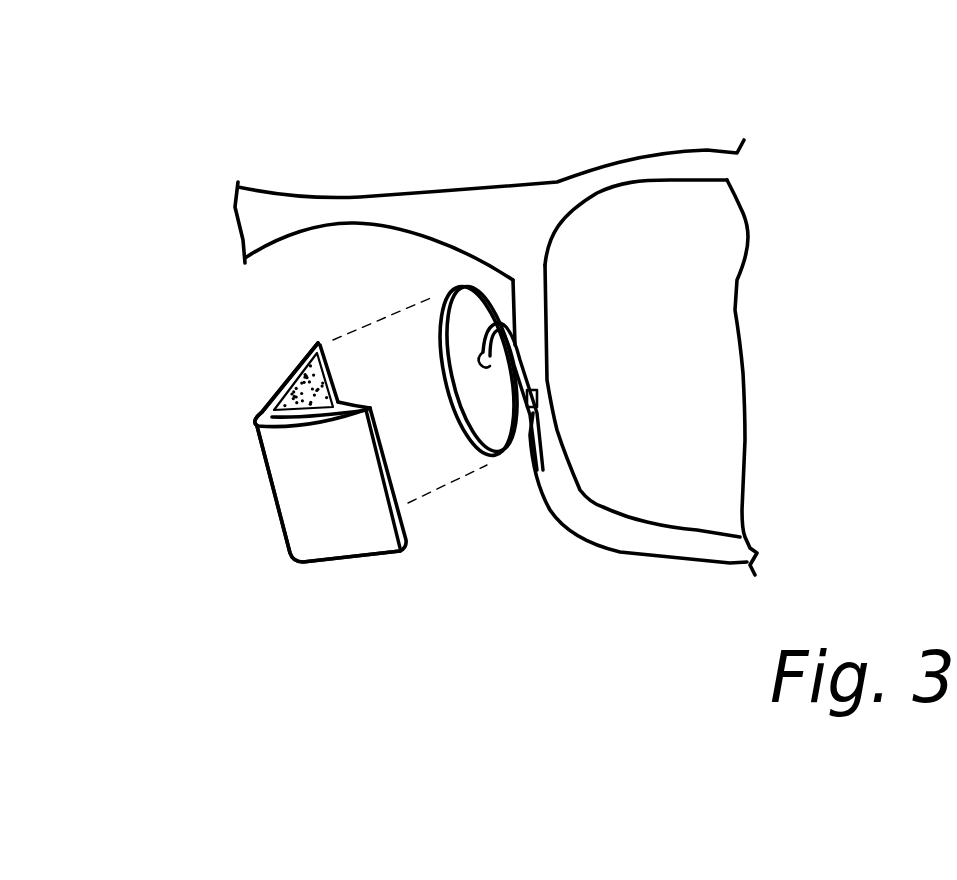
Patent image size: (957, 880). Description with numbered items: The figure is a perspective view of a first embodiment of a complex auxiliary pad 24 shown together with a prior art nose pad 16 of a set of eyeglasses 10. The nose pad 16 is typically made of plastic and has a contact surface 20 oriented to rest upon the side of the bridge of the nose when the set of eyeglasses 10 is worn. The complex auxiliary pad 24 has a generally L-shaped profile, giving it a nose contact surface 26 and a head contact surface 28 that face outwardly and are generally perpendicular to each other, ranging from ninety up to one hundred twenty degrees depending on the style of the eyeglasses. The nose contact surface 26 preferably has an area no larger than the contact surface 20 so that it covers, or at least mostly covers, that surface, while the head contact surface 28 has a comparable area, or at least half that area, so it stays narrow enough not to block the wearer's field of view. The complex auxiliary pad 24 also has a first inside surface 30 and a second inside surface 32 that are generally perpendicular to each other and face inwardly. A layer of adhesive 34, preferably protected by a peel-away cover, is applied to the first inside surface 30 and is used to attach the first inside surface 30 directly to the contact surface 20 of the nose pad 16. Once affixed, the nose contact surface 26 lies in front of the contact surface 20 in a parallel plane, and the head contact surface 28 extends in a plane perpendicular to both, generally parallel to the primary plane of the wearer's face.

The set of eyeglasses 10 is at (335, 153).
The nose pad 16 is at (470, 312).
The contact surface 20 is at (467, 408).
The complex auxiliary pad 24 is at (275, 505).
The nose contact surface 26 is at (273, 388).
The head contact surface 28 is at (337, 527).
The first inside surface 30 is at (318, 372).
The second inside surface 32 is at (393, 484).
The layer of adhesive 34 is at (340, 400).